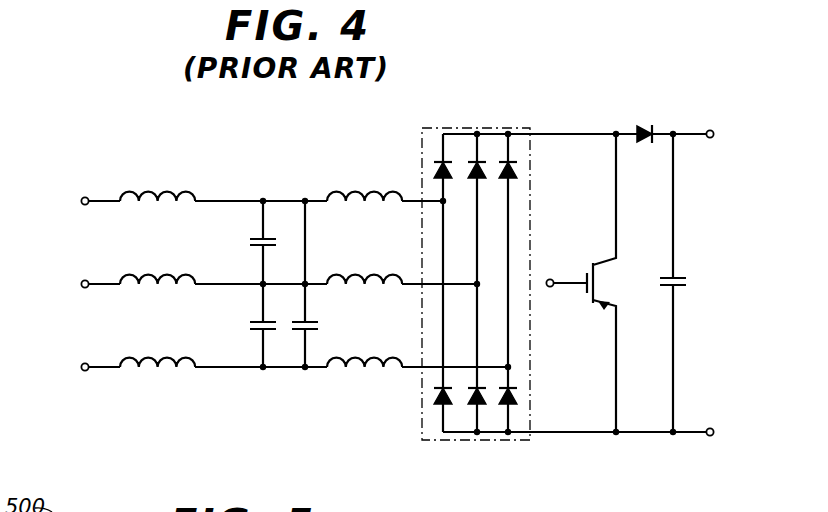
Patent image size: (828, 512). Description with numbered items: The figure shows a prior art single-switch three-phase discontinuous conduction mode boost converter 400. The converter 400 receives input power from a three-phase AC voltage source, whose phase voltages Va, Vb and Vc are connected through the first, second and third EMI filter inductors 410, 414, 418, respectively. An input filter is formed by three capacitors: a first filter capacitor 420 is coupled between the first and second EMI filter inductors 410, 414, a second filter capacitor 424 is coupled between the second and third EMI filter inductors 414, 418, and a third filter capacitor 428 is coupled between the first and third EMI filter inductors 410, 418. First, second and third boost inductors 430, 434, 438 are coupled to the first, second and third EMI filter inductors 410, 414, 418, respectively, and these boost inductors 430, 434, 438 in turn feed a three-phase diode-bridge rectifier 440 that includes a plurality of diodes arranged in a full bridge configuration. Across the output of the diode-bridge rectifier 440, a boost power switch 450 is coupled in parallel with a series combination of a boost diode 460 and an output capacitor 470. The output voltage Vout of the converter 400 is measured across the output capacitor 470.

The single-switch three-phase discontinuous conduction mode boost converter 400 is at (145, 124).
The first EMI filter inductor 410 is at (132, 190).
The second EMI filter inductor 414 is at (132, 273).
The third EMI filter inductor 418 is at (132, 356).
The first filter capacitor 420 is at (250, 234).
The second filter capacitor 424 is at (250, 317).
The third filter capacitor 428 is at (318, 322).
The first boost inductor 430 is at (357, 190).
The second boost inductor 434 is at (357, 273).
The third boost inductor 438 is at (373, 356).
The three-phase diode-bridge rectifier 440 is at (497, 128).
The boost power switch 450 is at (582, 276).
The boost diode 460 is at (655, 128).
The output capacitor 470 is at (667, 276).